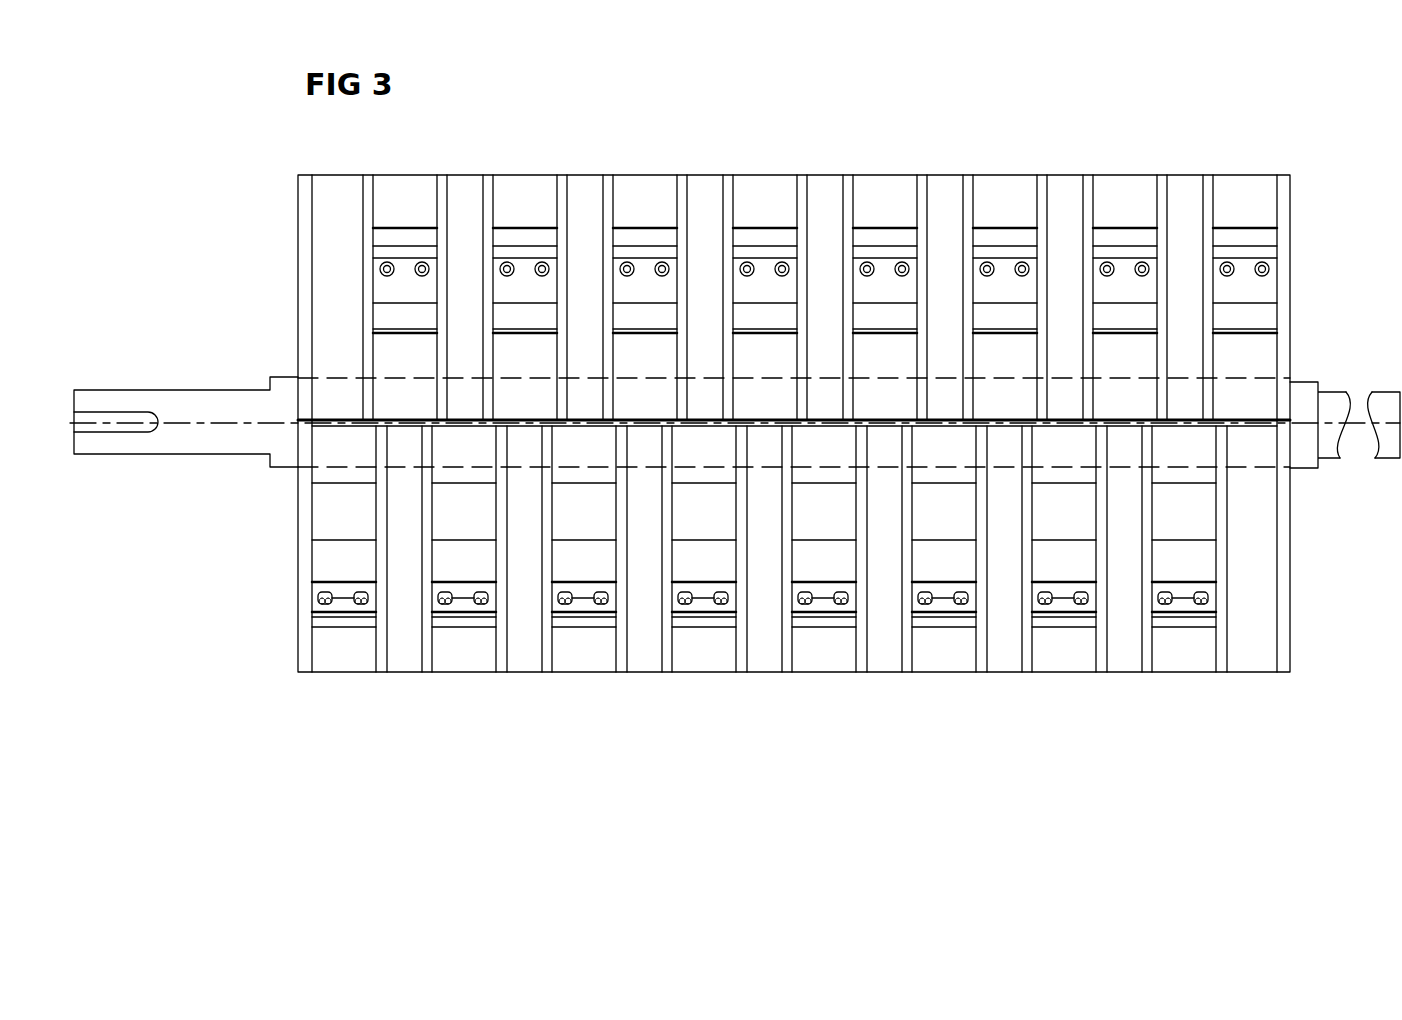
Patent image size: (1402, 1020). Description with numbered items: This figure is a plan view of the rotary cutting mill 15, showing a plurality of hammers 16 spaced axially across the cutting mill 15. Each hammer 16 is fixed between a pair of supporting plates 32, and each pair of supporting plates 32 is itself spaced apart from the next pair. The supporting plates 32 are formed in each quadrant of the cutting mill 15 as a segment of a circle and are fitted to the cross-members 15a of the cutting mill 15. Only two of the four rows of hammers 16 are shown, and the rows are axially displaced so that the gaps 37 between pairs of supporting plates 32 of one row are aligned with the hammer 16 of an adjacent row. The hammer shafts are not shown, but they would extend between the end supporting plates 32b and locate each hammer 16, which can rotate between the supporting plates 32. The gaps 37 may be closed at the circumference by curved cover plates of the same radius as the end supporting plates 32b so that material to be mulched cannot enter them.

The cutting mill 15 is at (1312, 192).
The cross-members 15a is at (1242, 421).
The hammer 16 is at (398, 285).
The supporting plates 32 is at (445, 200).
The gaps 37 is at (578, 198).
The end supporting plates 32b is at (298, 572).